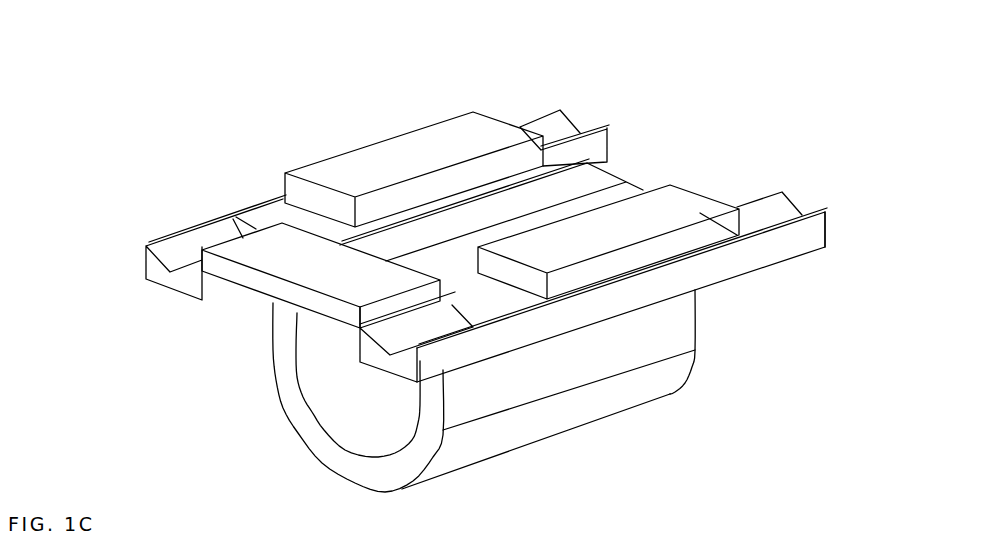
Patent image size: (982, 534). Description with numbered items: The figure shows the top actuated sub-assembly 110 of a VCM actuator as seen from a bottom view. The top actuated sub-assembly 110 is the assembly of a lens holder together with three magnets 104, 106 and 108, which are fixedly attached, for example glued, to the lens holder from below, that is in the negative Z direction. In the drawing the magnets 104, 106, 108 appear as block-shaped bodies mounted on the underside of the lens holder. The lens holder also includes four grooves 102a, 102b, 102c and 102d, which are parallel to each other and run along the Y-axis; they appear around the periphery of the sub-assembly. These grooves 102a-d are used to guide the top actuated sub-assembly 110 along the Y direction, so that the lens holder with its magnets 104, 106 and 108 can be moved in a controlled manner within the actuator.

The top actuated sub-assembly 110 is at (437, 82).
The groove 102a is at (563, 137).
The groove 102b is at (173, 255).
The groove 102c is at (787, 217).
The groove 102d is at (430, 325).
The magnet 104 is at (286, 291).
The magnet 106 is at (375, 170).
The magnet 108 is at (647, 243).